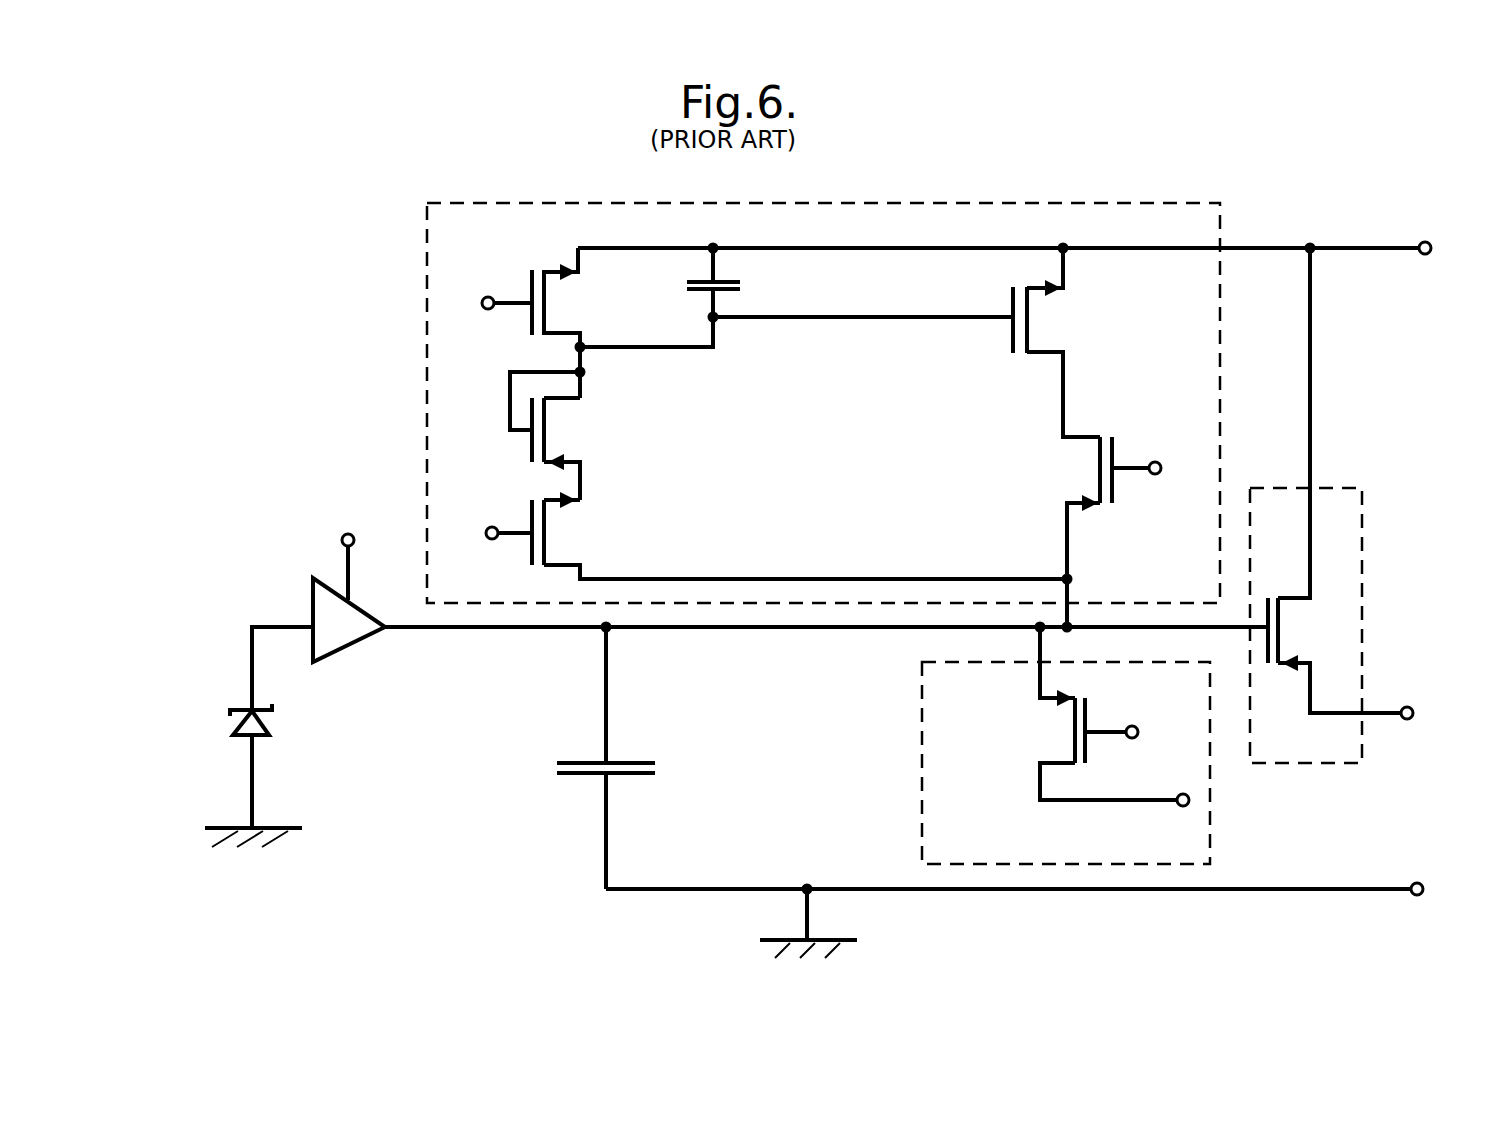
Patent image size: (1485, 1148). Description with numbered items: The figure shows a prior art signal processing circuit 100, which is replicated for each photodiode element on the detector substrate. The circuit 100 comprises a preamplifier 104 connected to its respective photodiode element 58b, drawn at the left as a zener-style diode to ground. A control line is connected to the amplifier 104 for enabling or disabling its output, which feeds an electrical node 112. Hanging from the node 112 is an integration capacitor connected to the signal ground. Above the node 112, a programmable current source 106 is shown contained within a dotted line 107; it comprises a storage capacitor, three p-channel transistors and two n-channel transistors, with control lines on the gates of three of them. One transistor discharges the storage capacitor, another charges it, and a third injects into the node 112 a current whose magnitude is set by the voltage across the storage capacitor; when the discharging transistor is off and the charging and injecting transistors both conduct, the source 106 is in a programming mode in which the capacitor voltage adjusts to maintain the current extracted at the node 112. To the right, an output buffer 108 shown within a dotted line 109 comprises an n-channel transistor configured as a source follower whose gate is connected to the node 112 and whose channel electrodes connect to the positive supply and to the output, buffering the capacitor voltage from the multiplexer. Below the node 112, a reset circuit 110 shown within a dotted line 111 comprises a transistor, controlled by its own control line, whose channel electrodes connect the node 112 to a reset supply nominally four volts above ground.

The signal processing circuit 100 is at (318, 462).
The preamplifier 104 is at (340, 633).
The programmable current source 106 is at (438, 350).
The dotted line 107 is at (1223, 218).
The output buffer 108 is at (1348, 562).
The dotted line 109 is at (1338, 486).
The reset circuit 110 is at (955, 762).
The dotted line 111 is at (1212, 838).
The electrical node 112 is at (851, 639).
The photodiode element 58b is at (247, 712).